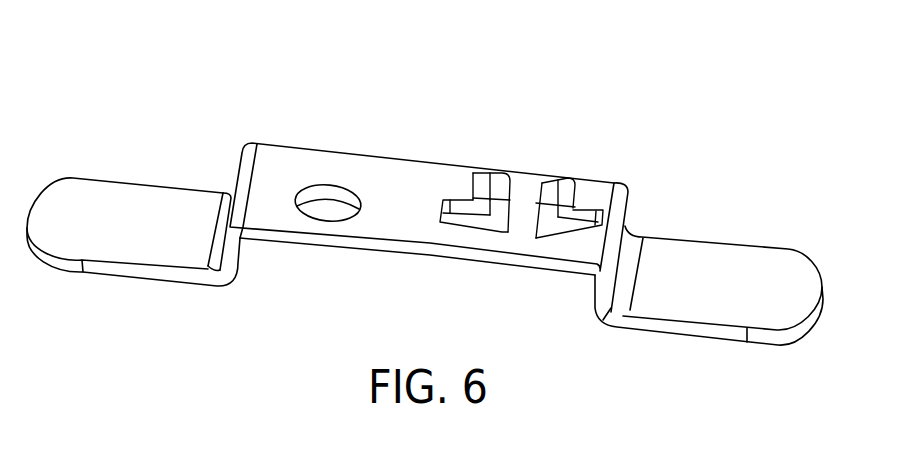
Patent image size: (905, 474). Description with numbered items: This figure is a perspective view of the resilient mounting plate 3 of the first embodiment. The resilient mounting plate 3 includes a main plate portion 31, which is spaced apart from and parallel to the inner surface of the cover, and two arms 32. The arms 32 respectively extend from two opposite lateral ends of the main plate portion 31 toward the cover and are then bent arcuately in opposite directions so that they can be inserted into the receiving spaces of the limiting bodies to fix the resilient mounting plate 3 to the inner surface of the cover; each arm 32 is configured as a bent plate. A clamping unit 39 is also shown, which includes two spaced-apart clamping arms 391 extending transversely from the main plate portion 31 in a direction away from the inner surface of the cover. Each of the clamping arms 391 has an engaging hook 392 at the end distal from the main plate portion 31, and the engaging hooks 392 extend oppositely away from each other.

The resilient mounting plate 3 is at (244, 112).
The main plate portion 31 is at (381, 178).
The arm 32 is at (133, 218).
The clamping unit 39 is at (514, 170).
The clamping arm 391 is at (493, 225).
The engaging hook 392 is at (480, 183).